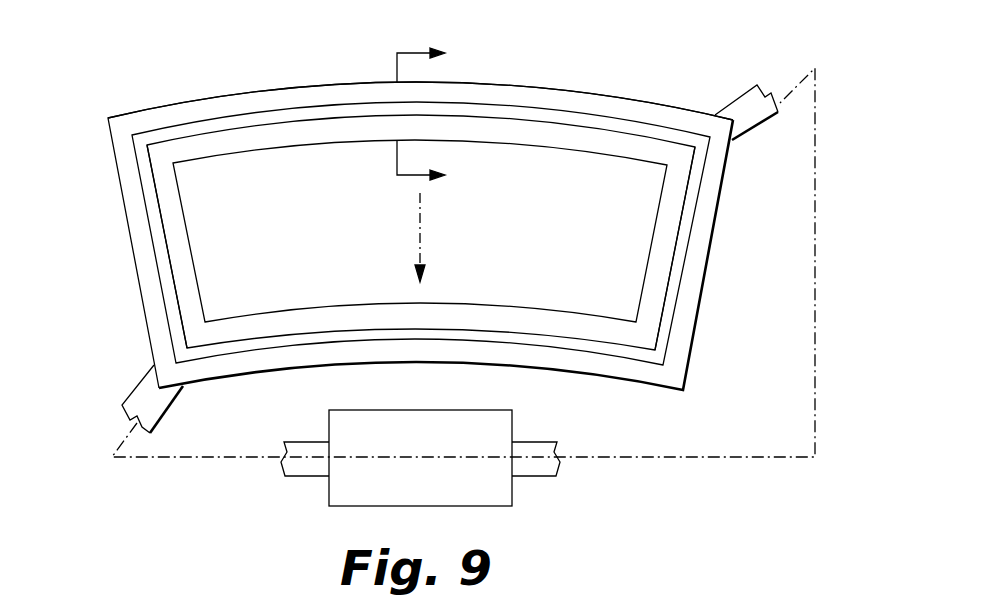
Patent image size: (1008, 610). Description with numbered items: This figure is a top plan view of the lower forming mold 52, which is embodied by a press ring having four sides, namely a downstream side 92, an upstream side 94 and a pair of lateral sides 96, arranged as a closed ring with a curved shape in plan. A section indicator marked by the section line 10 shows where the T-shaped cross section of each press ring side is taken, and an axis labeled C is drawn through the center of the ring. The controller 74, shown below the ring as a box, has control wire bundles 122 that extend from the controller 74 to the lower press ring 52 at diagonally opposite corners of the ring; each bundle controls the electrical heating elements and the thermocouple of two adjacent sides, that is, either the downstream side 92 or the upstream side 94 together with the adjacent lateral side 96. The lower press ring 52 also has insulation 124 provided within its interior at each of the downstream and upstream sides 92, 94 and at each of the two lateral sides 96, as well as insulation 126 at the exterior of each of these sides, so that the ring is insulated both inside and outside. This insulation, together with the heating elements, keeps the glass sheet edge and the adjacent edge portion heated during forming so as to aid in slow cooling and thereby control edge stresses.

The section line 10- 10 is at (440, 119).
The lower forming mold 52 is at (614, 110).
The controller 74 is at (420, 410).
The downstream side 92 is at (528, 342).
The upstream side 94 is at (527, 110).
The lateral sides 96 is at (158, 250).
The control wire bundles 122 is at (190, 458).
The insulation 124 is at (278, 147).
The insulation 126 is at (313, 84).
The central axis C is at (420, 241).